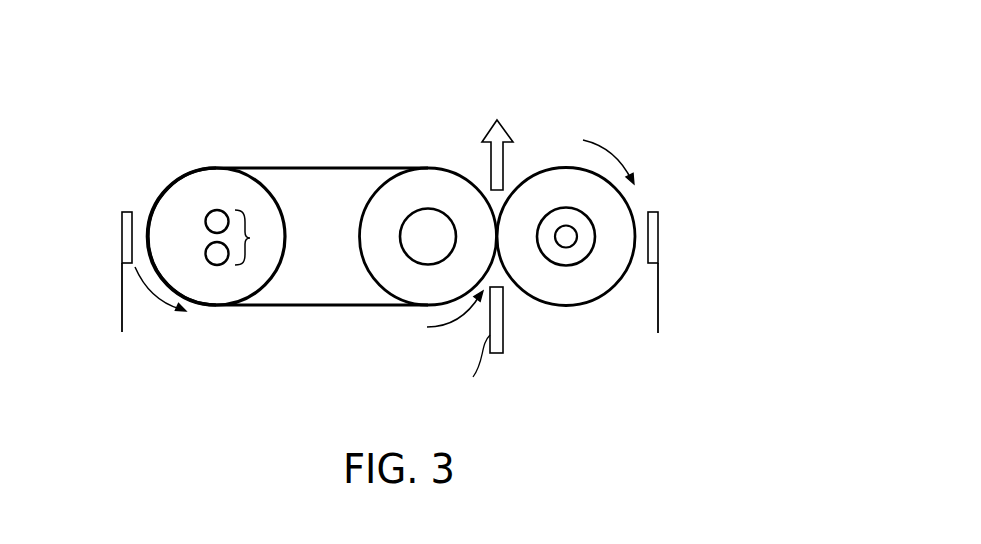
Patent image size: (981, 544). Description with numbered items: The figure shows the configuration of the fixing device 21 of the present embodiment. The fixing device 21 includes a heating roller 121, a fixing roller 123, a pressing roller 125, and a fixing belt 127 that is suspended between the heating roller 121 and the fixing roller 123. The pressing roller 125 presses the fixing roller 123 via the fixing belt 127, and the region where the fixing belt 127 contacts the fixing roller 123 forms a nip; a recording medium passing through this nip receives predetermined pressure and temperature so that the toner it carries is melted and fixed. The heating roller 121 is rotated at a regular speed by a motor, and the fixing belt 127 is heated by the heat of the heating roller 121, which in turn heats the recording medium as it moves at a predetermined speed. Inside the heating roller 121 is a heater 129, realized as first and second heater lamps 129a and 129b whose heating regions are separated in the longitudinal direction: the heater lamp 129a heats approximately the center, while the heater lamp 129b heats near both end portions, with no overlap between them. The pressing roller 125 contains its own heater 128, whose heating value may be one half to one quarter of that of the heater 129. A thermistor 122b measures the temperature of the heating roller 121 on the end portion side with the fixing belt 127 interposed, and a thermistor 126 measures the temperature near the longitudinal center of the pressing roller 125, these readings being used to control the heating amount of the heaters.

The fixing device 21 is at (631, 90).
The heating roller 121 is at (175, 187).
The thermistor 122b is at (122, 292).
The fixing roller 123 is at (392, 277).
The pressing roller 125 is at (572, 307).
The thermistor 126 is at (659, 298).
The fixing belt 127 is at (333, 168).
The heater 128 is at (563, 233).
The heater 129 is at (252, 238).
The first heater lamp 129a is at (217, 210).
The second heater lamp 129b is at (217, 265).